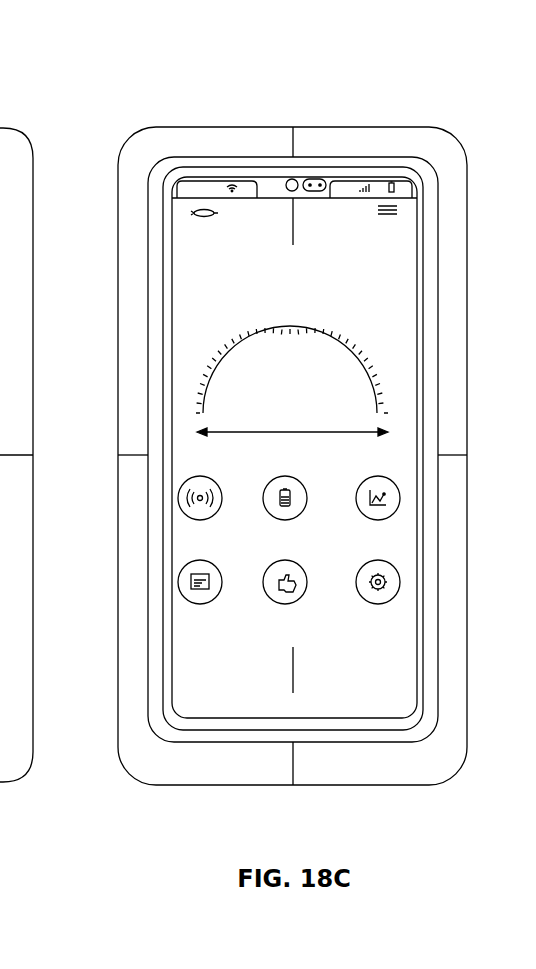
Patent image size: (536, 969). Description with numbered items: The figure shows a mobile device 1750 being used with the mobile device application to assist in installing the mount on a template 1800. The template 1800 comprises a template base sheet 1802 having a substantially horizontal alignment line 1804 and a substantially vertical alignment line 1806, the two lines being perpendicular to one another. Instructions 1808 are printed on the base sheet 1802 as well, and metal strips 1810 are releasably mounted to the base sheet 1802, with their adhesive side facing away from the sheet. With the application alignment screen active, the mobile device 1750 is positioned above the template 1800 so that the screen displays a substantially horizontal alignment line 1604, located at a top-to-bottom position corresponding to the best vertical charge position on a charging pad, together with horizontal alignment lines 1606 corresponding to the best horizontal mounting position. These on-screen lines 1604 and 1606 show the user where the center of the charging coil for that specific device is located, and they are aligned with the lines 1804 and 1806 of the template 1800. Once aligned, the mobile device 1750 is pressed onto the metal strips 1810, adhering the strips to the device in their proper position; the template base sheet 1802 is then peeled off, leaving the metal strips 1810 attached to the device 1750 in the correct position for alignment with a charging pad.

The template 1800 is at (363, 63).
The template base sheet 1802 is at (180, 136).
The alignment line 1804 is at (137, 453).
The alignment line 1806 is at (294, 144).
The mobile device 1750 is at (448, 253).
The alignment line 1604 is at (227, 434).
The horizontal alignment lines 1606 is at (293, 227).
The metal strips 1810 is at (0, 630).
The instructions 1808 is at (11, 93).